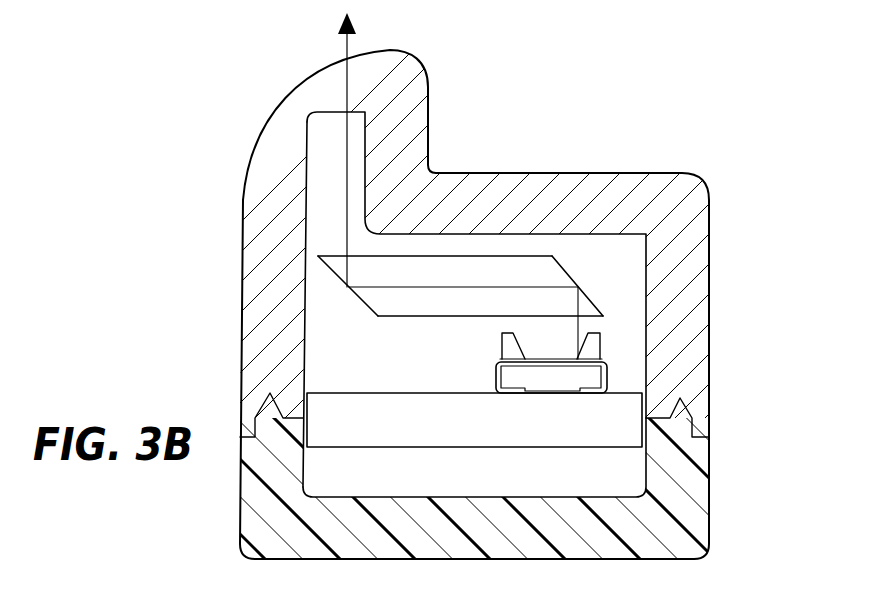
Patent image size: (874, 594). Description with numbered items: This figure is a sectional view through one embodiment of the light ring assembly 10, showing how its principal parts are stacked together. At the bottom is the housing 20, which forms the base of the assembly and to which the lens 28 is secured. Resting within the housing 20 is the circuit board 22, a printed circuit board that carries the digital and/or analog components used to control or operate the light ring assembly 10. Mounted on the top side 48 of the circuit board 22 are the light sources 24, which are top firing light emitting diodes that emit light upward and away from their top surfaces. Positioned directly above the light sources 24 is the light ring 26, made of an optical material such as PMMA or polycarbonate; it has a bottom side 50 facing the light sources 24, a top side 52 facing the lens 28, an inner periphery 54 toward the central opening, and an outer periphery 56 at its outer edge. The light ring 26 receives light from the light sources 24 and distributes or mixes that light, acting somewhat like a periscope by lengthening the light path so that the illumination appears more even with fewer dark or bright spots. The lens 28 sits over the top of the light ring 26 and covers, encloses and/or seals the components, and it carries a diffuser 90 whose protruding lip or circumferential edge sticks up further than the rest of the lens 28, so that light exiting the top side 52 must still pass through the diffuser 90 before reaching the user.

The light ring assembly 10 is at (665, 138).
The housing 20 is at (670, 515).
The circuit board 22 is at (593, 428).
The light sources 24 is at (577, 375).
The light ring 26 is at (512, 297).
The lens 28 is at (567, 190).
The top side of the PCB 48 is at (353, 395).
The bottom side of the light ring 50 is at (422, 315).
The top side of the light ring 52 is at (385, 255).
The inner periphery of the light ring 54 is at (358, 298).
The outer periphery of the light ring 56 is at (587, 294).
The diffuser 90 is at (278, 155).